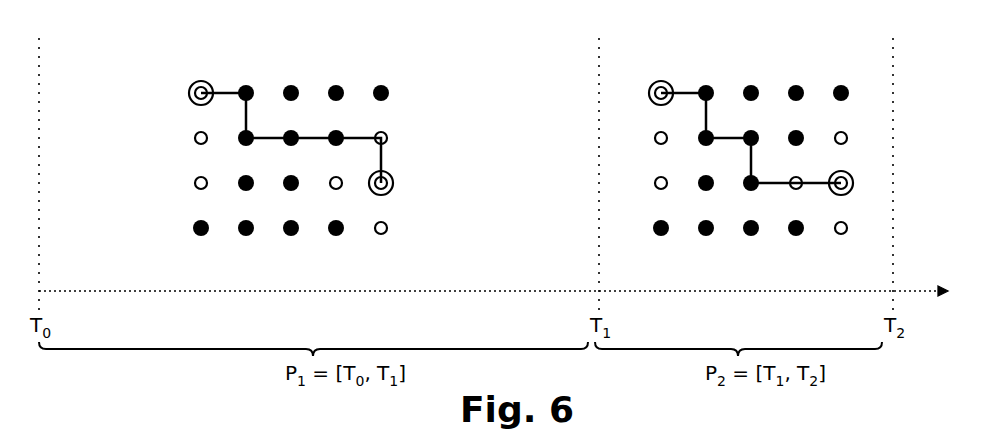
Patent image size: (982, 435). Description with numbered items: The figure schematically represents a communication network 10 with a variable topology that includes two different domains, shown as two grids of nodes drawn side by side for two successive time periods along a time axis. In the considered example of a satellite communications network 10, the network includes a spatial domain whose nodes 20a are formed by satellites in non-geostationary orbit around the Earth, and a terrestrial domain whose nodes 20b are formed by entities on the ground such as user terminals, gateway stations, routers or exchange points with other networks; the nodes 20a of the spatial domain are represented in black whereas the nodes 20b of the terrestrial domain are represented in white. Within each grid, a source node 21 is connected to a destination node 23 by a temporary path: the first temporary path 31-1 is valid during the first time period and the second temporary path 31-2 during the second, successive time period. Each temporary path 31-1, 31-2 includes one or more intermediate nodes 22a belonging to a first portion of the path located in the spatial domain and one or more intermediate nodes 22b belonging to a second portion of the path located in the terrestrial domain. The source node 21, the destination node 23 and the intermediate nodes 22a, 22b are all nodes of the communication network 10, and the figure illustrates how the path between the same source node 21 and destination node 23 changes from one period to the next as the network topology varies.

The communication network 10 is at (460, 66).
The nodes belonging to the spatial domain 20a is at (195, 228).
The nodes belonging to the terrestrial domain 20b is at (195, 183).
The source node 21 is at (201, 81).
The intermediate nodes belonging to a first portion of the path in the spatial domai 22a is at (246, 85).
The intermediate nodes belonging to a second portion of the path in the terrestrial 22b is at (386, 135).
The destination node 23 is at (392, 187).
The temporary path 31-1 is at (383, 160).
The temporary path 31-2 is at (824, 181).